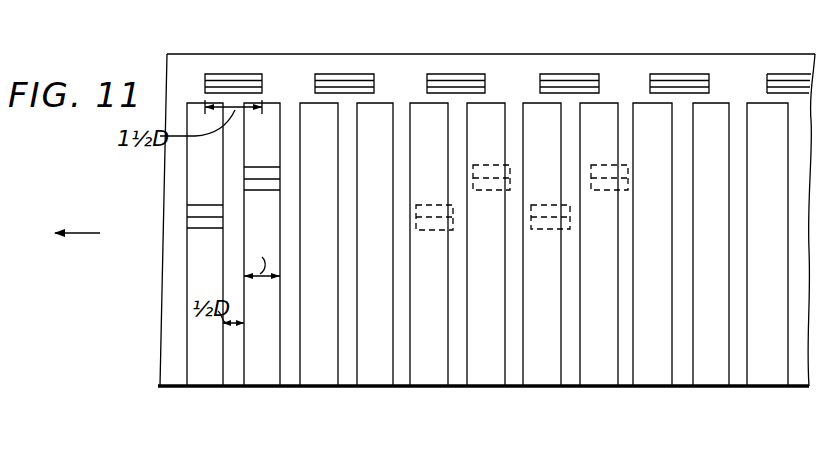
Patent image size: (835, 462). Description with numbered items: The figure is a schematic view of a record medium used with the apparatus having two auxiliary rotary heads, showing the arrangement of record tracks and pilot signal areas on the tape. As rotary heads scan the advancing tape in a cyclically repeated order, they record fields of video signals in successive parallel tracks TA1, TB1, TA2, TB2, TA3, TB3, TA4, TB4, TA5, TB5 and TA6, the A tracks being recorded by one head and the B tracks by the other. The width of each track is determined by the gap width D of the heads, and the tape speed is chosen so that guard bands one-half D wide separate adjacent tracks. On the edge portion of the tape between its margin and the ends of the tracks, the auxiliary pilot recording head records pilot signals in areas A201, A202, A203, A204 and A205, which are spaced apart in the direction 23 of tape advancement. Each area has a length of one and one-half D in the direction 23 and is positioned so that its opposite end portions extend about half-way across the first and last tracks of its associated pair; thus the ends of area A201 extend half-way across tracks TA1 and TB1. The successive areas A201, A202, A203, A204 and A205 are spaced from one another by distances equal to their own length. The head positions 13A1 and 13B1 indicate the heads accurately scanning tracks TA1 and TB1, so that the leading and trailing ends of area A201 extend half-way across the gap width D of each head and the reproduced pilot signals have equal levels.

The pilot signal area A201 is at (235, 76).
The pilot signal area A202 is at (352, 76).
The pilot signal area A203 is at (461, 76).
The pilot signal area A204 is at (573, 76).
The pilot signal area A205 is at (676, 74).
The record track TA1 is at (205, 376).
The record track TB1 is at (266, 376).
The record track TA2 is at (317, 376).
The record track TB2 is at (375, 376).
The record track TA3 is at (432, 374).
The record track TB3 is at (484, 374).
The record track TA4 is at (543, 374).
The record track TB4 is at (602, 374).
The record track TA5 is at (658, 374).
The record track TB5 is at (713, 374).
The record track TA6 is at (767, 374).
The head position of head 13A 13A1 is at (203, 229).
The head position of head 13B 13B1 is at (250, 168).
The direction of tape advancement 23 is at (80, 233).
The gap width D is at (262, 255).